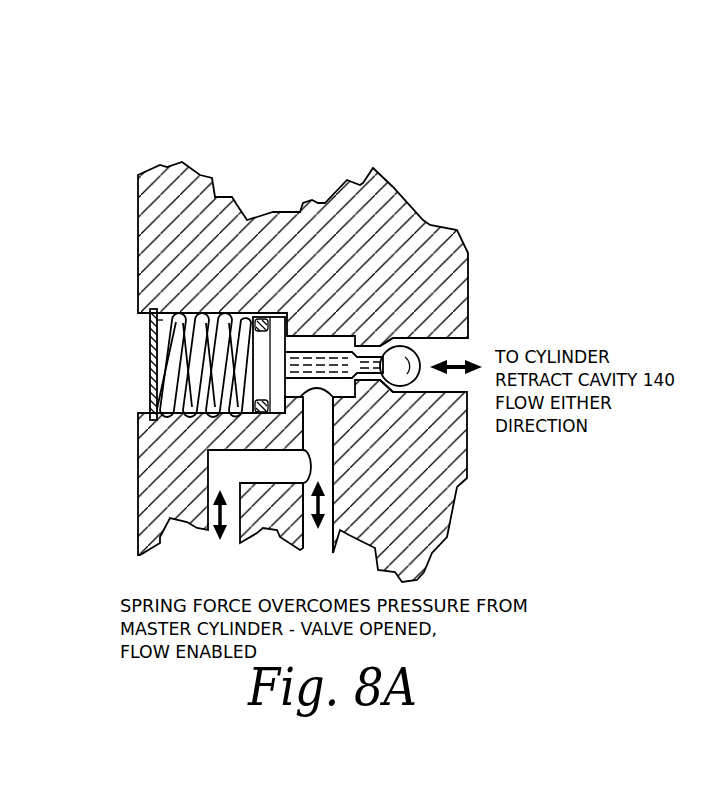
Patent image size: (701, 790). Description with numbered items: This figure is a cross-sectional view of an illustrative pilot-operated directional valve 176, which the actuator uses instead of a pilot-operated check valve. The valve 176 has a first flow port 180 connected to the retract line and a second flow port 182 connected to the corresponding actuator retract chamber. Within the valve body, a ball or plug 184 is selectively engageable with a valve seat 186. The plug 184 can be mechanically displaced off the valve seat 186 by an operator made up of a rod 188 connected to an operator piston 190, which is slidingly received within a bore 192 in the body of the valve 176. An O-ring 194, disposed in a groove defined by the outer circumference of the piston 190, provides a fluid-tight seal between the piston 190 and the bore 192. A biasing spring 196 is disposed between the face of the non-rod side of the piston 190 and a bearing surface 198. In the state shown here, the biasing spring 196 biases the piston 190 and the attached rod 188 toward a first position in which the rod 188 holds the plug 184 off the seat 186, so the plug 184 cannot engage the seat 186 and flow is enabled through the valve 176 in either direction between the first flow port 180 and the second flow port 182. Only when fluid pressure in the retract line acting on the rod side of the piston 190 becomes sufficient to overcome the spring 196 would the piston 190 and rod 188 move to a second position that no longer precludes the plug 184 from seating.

The pilot-operated directional valve 176 is at (362, 140).
The first flow port 180 is at (322, 413).
The second flow port 182 is at (388, 390).
The ball or plug 184 is at (419, 358).
The valve seat 186 is at (392, 340).
The rod 188 is at (335, 352).
The operator piston 190 is at (283, 313).
The bore 192 is at (212, 312).
The O-ring 194 is at (262, 316).
The biasing spring 196 is at (225, 315).
The bearing surface 198 is at (148, 323).